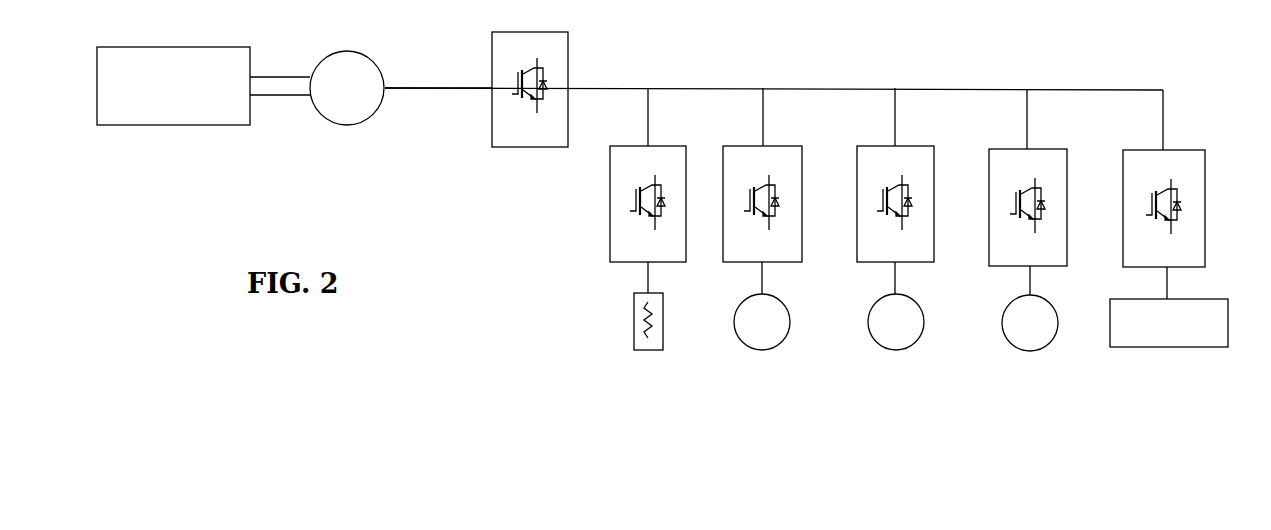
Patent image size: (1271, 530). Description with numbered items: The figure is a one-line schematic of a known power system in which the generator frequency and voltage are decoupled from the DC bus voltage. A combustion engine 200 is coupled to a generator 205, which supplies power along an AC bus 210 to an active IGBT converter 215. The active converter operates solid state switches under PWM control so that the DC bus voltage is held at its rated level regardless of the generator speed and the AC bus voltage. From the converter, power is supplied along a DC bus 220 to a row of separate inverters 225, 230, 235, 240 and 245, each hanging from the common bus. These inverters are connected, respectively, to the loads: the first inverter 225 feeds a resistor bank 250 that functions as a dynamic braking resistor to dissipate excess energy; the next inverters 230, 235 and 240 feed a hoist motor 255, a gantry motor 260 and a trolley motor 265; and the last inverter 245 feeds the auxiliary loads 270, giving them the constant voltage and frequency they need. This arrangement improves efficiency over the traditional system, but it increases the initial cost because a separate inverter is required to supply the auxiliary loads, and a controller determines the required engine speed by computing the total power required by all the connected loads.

The combustion engine 200 is at (187, 125).
The generator 205 is at (365, 125).
The AC bus 210 is at (400, 85).
The active IGBT converter 215 is at (568, 32).
The DC bus 220 is at (800, 88).
The inverter 225 is at (610, 248).
The inverter 230 is at (747, 267).
The inverter 235 is at (878, 267).
The inverter 240 is at (1012, 268).
The inverter 245 is at (1182, 148).
The resistor bank 250 is at (640, 355).
The hoist motor 255 is at (770, 350).
The gantry motor 260 is at (902, 350).
The trolley motor 265 is at (1028, 353).
The auxiliary loads 270 is at (1213, 348).